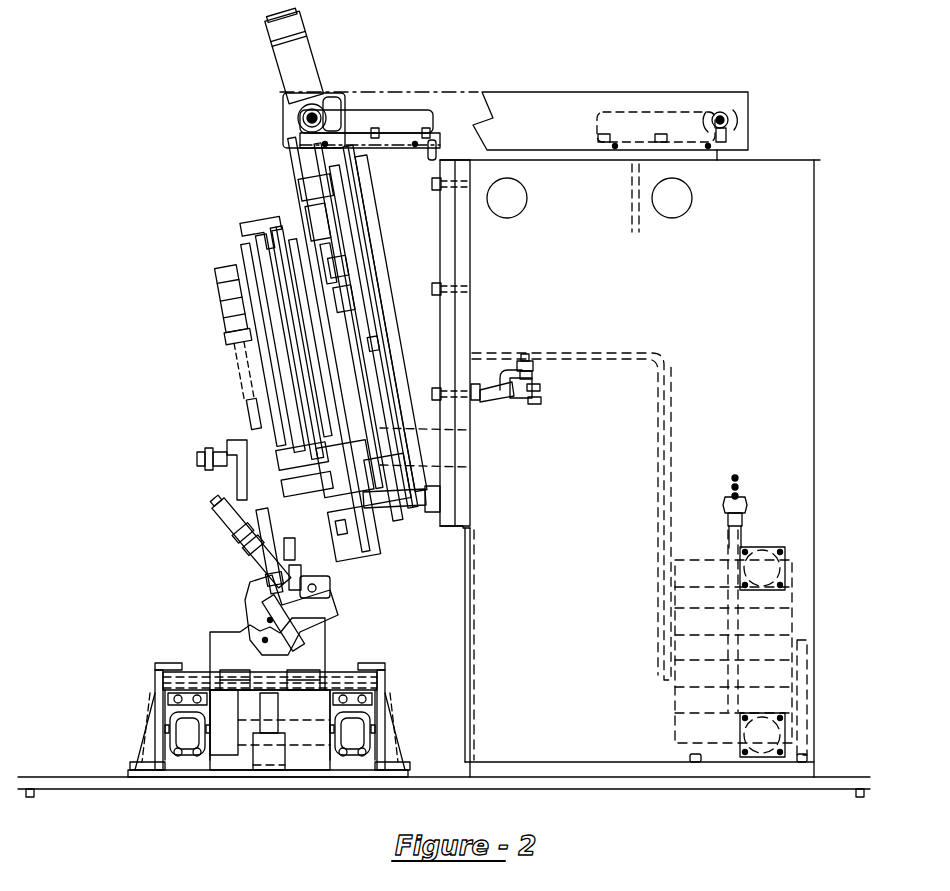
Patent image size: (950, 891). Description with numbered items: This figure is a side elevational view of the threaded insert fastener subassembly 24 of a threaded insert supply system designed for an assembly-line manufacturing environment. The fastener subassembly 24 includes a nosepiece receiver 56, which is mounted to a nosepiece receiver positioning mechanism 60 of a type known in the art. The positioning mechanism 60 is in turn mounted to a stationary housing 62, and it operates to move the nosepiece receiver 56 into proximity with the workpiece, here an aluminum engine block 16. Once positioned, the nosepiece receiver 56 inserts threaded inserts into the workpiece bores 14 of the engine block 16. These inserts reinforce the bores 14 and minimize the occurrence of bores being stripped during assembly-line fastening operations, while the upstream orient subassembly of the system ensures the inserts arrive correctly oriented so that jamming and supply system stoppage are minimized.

The bores 14 is at (305, 592).
The aluminum engine block 16 is at (245, 600).
The fastener subassembly 24 is at (170, 528).
The nosepiece receiver 56 is at (295, 548).
The nosepiece receiver positioning mechanism 60 is at (185, 232).
The stationary housing 62 is at (778, 268).